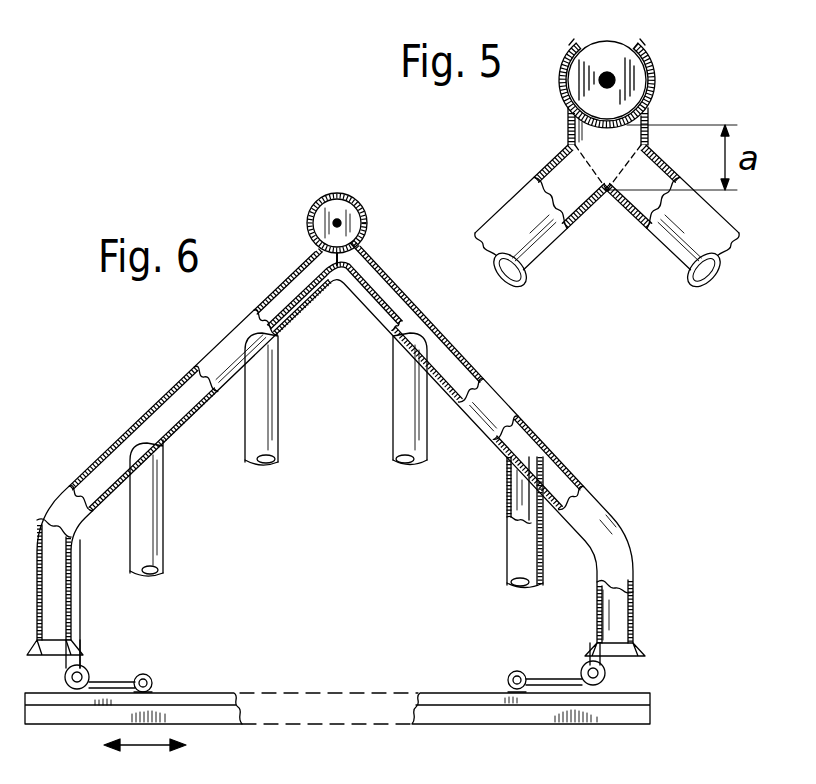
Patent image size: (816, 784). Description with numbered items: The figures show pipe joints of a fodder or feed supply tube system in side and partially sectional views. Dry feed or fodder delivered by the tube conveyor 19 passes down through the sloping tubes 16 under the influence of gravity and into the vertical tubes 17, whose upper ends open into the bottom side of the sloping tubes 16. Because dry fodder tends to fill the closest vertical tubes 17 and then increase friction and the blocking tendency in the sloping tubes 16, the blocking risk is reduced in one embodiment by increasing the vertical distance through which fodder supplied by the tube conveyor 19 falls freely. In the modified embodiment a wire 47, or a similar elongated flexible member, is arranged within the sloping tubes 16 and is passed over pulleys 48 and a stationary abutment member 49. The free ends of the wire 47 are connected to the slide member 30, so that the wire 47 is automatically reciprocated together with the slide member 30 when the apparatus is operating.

In FIG. 5, the sloping tube 16 is at (513, 204).
In FIG. 6, the sloping tube 16 is at (224, 345).
In FIG. 6, the vertical tube 17 is at (272, 419).
In FIG. 5, the tube conveyor 19 is at (616, 33).
In FIG. 6, the tube conveyor 19 is at (342, 194).
In FIG. 6, the slide member 30 is at (208, 693).
In FIG. 6, the wire 47 is at (371, 290).
In FIG. 6, the pulley 48 is at (90, 669).
In FIG. 6, the stationary abutment member 49 is at (338, 284).